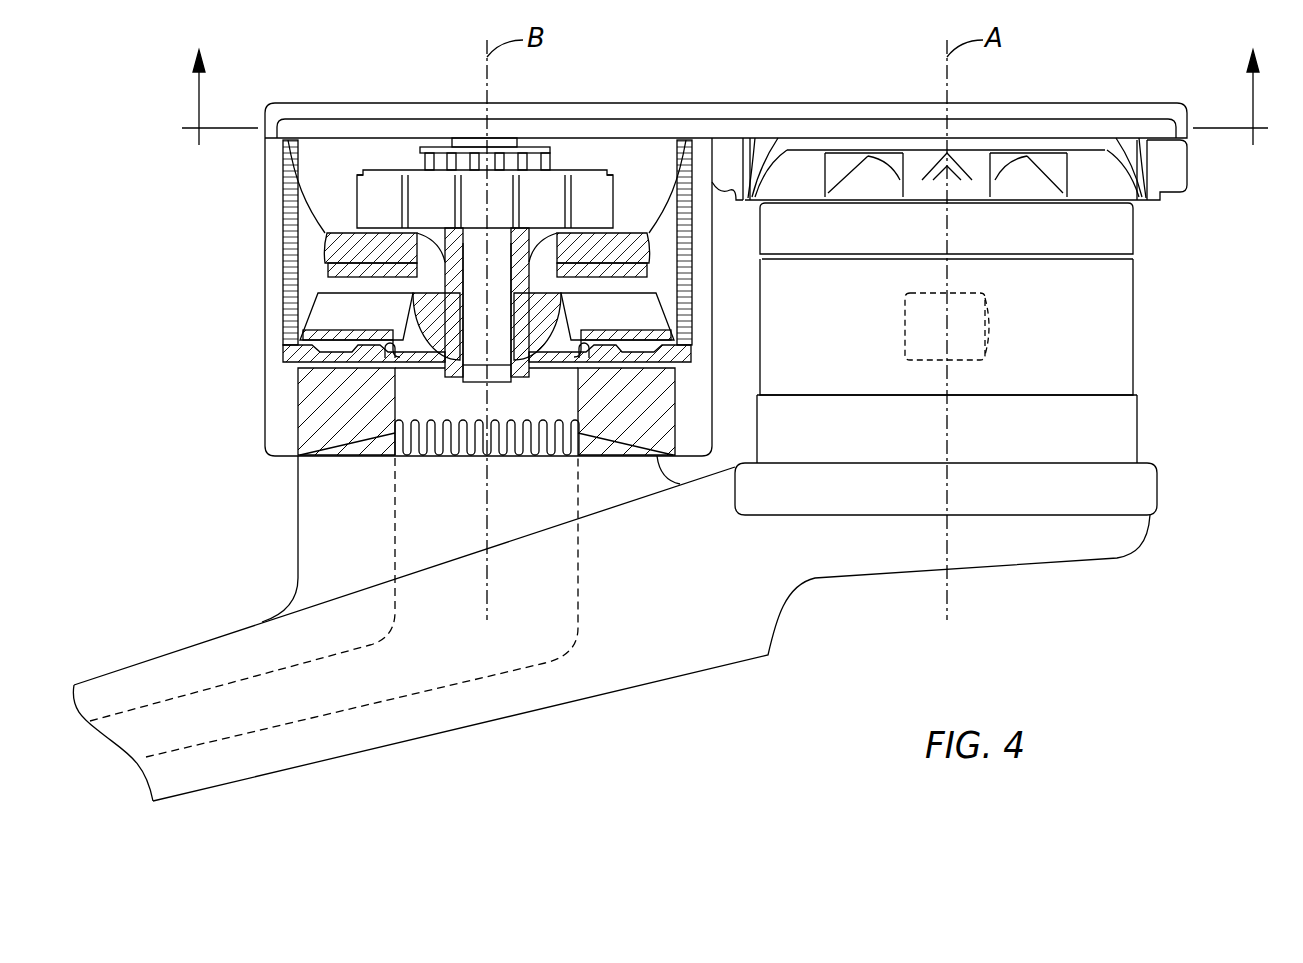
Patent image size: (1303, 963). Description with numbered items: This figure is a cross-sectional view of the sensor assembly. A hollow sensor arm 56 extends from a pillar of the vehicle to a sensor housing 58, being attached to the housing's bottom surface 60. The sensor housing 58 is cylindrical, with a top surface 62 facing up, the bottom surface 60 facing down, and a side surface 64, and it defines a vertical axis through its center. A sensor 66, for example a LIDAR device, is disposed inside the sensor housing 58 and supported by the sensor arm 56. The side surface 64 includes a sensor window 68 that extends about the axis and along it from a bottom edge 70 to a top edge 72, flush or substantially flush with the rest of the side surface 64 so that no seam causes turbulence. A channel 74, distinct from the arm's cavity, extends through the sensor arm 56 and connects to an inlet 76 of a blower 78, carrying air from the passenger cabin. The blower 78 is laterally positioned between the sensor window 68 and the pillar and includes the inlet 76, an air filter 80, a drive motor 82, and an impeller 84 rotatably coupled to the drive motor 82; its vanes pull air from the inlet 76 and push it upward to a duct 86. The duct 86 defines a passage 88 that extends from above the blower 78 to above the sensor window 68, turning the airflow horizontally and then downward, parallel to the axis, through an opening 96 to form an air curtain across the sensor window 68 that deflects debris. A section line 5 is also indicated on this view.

The section line 5- 5 is at (728, 98).
The sensor arm 56 is at (115, 672).
The sensor housing 58 is at (1137, 435).
The bottom surface 60 is at (1095, 463).
The top surface 62 is at (1110, 200).
The side surface 64 is at (1135, 242).
The sensor 66 is at (987, 310).
The sensor window 68 is at (1133, 363).
The bottom edge 70 is at (910, 398).
The top edge 72 is at (990, 253).
The channel 74 is at (228, 683).
The inlet 76 is at (393, 516).
The blower 78 is at (265, 352).
The air filter 80 is at (427, 415).
The drive motor 82 is at (385, 168).
The impeller 84 is at (312, 308).
The duct 86 is at (593, 103).
The passage 88 is at (660, 103).
The opening 96 is at (1150, 167).